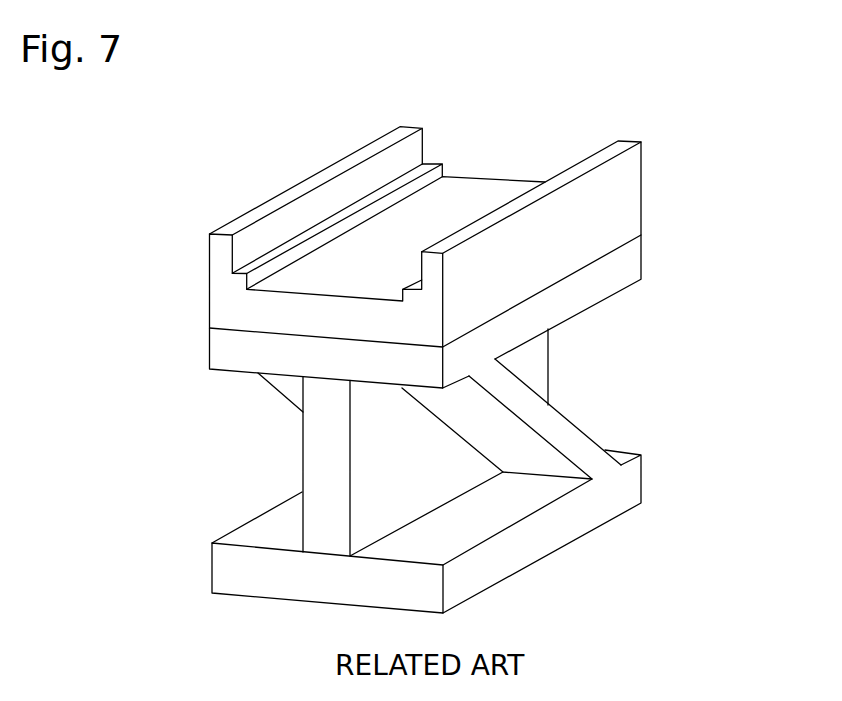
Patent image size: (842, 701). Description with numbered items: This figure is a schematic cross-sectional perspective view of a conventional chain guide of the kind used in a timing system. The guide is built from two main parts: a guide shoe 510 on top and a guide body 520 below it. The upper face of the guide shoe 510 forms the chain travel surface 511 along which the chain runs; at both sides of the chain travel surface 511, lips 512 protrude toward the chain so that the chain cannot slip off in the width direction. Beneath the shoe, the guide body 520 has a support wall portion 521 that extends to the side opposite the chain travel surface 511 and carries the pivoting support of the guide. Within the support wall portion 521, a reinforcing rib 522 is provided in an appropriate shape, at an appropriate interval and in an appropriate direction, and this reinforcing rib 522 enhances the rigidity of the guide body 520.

The guide shoe 510 is at (267, 317).
The chain travel surface 511 is at (428, 218).
The lips 512 is at (273, 205).
The guide body 520 is at (290, 577).
The support wall portion 521 is at (415, 437).
The reinforcing rib 522 is at (553, 425).